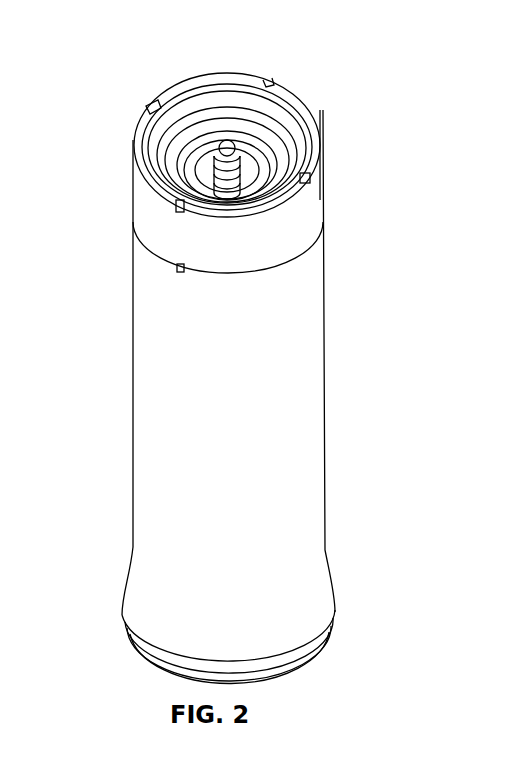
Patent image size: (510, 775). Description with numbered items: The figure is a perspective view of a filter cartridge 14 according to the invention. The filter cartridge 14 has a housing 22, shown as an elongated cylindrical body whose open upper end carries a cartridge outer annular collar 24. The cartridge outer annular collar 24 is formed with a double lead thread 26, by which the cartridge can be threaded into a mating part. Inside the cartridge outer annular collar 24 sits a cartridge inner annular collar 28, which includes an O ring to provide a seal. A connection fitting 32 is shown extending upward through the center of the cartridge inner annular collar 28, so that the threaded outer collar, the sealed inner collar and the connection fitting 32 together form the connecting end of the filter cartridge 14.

The filter cartridge 14 is at (101, 401).
The housing 22 is at (312, 408).
The cartridge outer annular collar 24 is at (313, 205).
The double lead thread 26 is at (188, 118).
The cartridge inner annular collar 28 is at (150, 152).
The connection fitting 32 is at (265, 148).